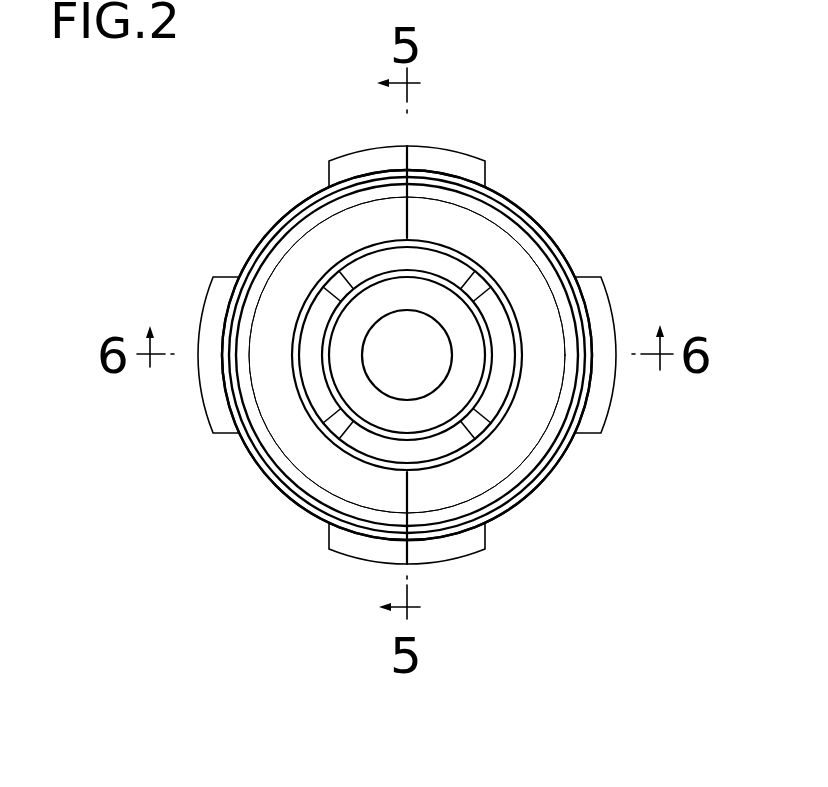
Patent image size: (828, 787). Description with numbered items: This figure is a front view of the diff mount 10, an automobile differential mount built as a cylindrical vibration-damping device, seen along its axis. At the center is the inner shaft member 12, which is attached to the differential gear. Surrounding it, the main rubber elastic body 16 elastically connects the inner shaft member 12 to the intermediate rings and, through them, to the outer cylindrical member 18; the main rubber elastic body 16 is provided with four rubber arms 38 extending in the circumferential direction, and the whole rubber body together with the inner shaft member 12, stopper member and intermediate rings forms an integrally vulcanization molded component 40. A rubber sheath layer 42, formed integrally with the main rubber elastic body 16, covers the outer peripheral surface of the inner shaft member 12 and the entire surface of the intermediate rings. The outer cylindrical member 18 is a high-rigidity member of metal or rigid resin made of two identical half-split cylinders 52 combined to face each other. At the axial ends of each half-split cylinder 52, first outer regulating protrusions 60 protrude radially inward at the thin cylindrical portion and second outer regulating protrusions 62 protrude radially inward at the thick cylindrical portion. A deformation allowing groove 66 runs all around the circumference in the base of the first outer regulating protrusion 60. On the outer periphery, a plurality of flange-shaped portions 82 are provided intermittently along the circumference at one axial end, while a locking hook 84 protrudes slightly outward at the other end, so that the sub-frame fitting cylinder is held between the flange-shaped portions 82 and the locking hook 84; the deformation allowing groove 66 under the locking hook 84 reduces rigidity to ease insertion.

The diff mount 10 is at (540, 162).
The inner shaft member 12 is at (462, 423).
The main rubber elastic body 16 is at (462, 248).
The outer cylindrical member 18 is at (275, 218).
The rubber arm 38 is at (382, 263).
The integrally vulcanization molded component 40 is at (528, 373).
The rubber sheath layer 42 is at (333, 387).
The half-split cylinder 52 is at (513, 450).
The first outer regulating protrusion 60 is at (415, 220).
The second outer regulating protrusion 62 is at (547, 345).
The deformation allowing groove 66 is at (299, 228).
The flange-shaped portion 82 is at (417, 153).
The locking hook 84 is at (563, 450).